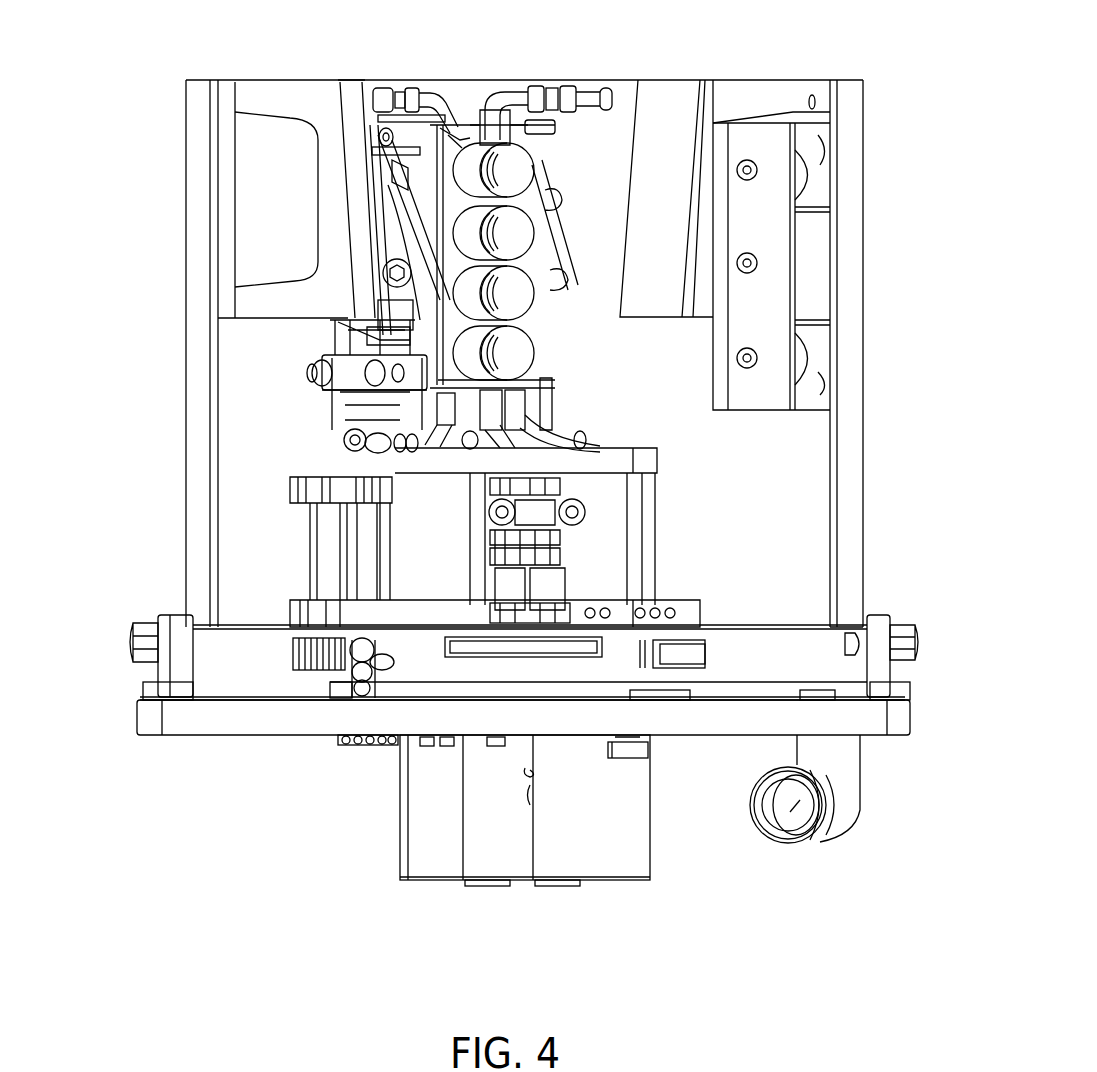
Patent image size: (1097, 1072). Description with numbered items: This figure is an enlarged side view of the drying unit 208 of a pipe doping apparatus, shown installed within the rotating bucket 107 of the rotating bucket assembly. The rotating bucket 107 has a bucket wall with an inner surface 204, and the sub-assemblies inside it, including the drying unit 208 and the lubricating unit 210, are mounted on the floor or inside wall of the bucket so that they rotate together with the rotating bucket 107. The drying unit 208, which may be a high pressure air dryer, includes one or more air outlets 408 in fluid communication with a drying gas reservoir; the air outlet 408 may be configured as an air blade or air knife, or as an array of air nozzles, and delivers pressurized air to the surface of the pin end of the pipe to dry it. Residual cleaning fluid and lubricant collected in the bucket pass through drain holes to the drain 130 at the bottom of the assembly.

The rotating bucket 107 is at (185, 343).
The drain 130 is at (771, 840).
The inner surface 204 is at (826, 592).
The drying unit 208 is at (793, 122).
The lubricating unit 210 is at (463, 100).
The air outlet 408 is at (707, 258).